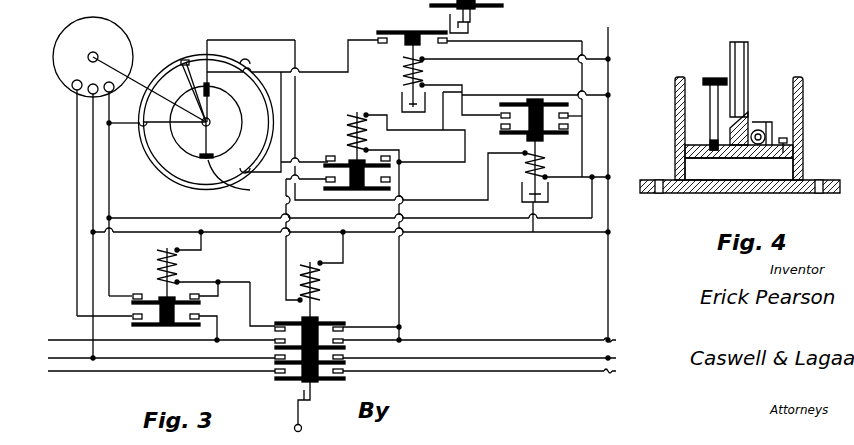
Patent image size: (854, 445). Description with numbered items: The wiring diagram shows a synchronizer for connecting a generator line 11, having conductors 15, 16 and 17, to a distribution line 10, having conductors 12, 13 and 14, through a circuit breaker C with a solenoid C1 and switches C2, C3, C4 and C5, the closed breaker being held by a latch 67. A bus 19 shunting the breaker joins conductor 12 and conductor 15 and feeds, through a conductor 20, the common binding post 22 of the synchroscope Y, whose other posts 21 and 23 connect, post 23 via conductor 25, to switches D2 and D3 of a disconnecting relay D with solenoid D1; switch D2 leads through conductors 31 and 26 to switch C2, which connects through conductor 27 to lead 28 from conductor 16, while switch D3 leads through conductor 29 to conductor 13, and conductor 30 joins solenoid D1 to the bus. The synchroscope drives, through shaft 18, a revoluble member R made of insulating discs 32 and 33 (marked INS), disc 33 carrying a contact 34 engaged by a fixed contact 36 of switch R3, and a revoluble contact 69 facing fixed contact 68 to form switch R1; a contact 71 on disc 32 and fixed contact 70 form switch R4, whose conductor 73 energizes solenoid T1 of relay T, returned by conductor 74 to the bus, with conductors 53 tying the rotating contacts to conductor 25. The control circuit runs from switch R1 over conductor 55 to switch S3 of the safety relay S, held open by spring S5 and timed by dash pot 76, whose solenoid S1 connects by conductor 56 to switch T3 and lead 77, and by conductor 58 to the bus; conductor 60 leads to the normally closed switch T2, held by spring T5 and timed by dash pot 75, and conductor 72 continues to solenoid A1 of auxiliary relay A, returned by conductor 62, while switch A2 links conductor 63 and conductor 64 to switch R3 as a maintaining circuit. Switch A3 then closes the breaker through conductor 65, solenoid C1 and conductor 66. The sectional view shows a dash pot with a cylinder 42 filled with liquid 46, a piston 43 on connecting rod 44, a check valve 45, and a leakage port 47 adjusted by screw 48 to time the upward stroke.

In FIG. 3, the synchroscope Y is at (60, 45).
In FIG. 3, the binding post 21 is at (72, 82).
In FIG. 3, the binding post 22 is at (88, 90).
In FIG. 3, the binding post 23 is at (105, 90).
In FIG. 3, the shaft 18 is at (140, 86).
In FIG. 3, the conductor 20 is at (76, 150).
In FIG. 3, the conductor 25 is at (92, 190).
In FIG. 3, the conductors 53 is at (122, 120).
In FIG. 3, the contact 71 is at (150, 162).
In FIG. 3, the disc 32 is at (155, 135).
In FIG. 3, the revoluble contact 69 is at (217, 118).
In FIG. 3, the disc 33 is at (180, 96).
In FIG. 3, the switch R1 is at (212, 88).
In FIG. 3, the contact 34 is at (212, 153).
In FIG. 3, the fixed contact 36 is at (209, 166).
In FIG. 3, the fixed contact 68 is at (209, 72).
In FIG. 3, the fixed contact 70 is at (211, 52).
In FIG. 3, the switch R4 is at (212, 44).
In FIG. 3, the revoluble member R is at (242, 150).
In FIG. 3, the switch R3 is at (238, 177).
In FIG. 3, the insulation INS is at (180, 172).
In FIG. 3, the conductor 73 is at (298, 30).
In FIG. 3, the conductor 55 is at (316, 68).
In FIG. 3, the conductor 64 is at (283, 120).
In FIG. 3, the conductor 30 is at (258, 212).
In FIG. 3, the lead 77 is at (474, 236).
In FIG. 3, the bus 19 is at (606, 280).
In FIG. 3, the safety relay S is at (400, 40).
In FIG. 3, the spring S5 is at (406, 30).
In FIG. 3, the switch S3 is at (450, 42).
In FIG. 3, the solenoid S1 is at (402, 70).
In FIG. 3, the dash pot 76 is at (405, 96).
In FIG. 3, the conductor 58 is at (512, 58).
In FIG. 3, the conductor 60 is at (570, 41).
In FIG. 3, the conductor 56 is at (462, 80).
In FIG. 3, the latch 67 is at (450, 18).
In FIG. 3, the auxiliary relay A is at (340, 112).
In FIG. 3, the solenoid A1 is at (350, 118).
In FIG. 3, the switch A2 is at (336, 148).
In FIG. 3, the switch A3 is at (390, 180).
In FIG. 3, the conductor 63 is at (394, 135).
In FIG. 3, the conductor 62 is at (448, 132).
In FIG. 3, the conductor 72 is at (450, 166).
In FIG. 3, the lead 28 is at (397, 262).
In FIG. 3, the conductor 27 is at (402, 320).
In FIG. 3, the relay T is at (546, 140).
In FIG. 3, the spring T5 is at (527, 99).
In FIG. 3, the switch T3 is at (560, 97).
In FIG. 3, the switch T2 is at (568, 128).
In FIG. 3, the solenoid T1 is at (524, 166).
In FIG. 3, the conductor 74 is at (574, 186).
In FIG. 3, the dash pot 75 is at (533, 234).
In FIG. 3, the disconnecting relay D is at (154, 287).
In FIG. 3, the solenoid D1 is at (160, 260).
In FIG. 3, the switch D2 is at (215, 296).
In FIG. 3, the switch D3 is at (134, 320).
In FIG. 3, the conductor 31 is at (212, 292).
In FIG. 3, the conductor 26 is at (252, 298).
In FIG. 3, the conductor 29 is at (218, 318).
In FIG. 3, the circuit breaker C is at (322, 312).
In FIG. 3, the solenoid C1 is at (322, 285).
In FIG. 3, the switch C2 is at (276, 326).
In FIG. 3, the switch C3 is at (345, 338).
In FIG. 3, the switch C4 is at (343, 358).
In FIG. 3, the switch C5 is at (275, 380).
In FIG. 3, the conductor 65 is at (290, 258).
In FIG. 3, the conductor 66 is at (346, 254).
In FIG. 3, the conductor 15 is at (455, 340).
In FIG. 3, the conductor 16 is at (498, 338).
In FIG. 3, the conductor 17 is at (540, 371).
In FIG. 3, the distribution line 10 is at (519, 349).
In FIG. 3, the conductor 13 is at (68, 338).
In FIG. 3, the generator line 11 is at (62, 352).
In FIG. 3, the conductor 12 is at (54, 360).
In FIG. 3, the conductor 14 is at (76, 374).
In FIG. 4, the cylinder 42 is at (803, 150).
In FIG. 4, the liquid 46 is at (772, 168).
In FIG. 4, the piston 43 is at (741, 158).
In FIG. 4, the adjusting screw 48 is at (715, 77).
In FIG. 4, the connecting rod 44 is at (742, 70).
In FIG. 4, the check valve 45 is at (760, 125).
In FIG. 4, the leakage port 47 is at (710, 158).